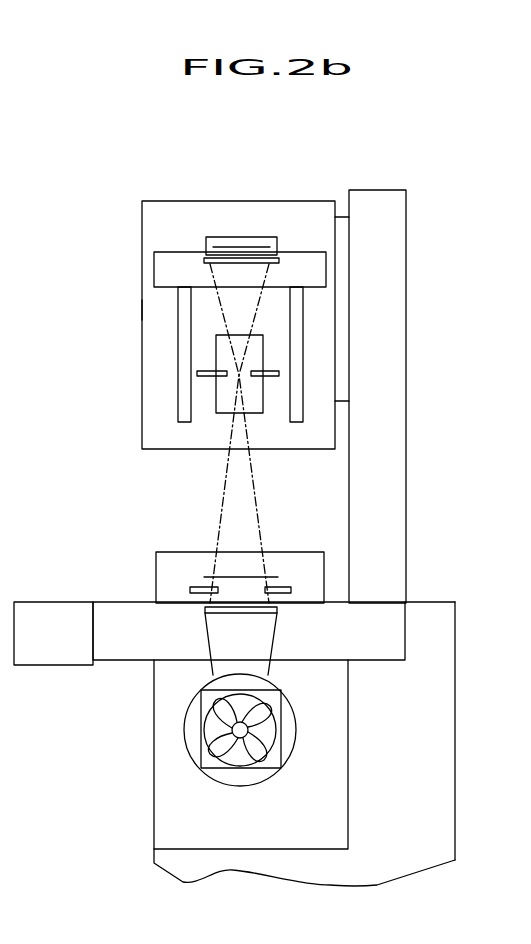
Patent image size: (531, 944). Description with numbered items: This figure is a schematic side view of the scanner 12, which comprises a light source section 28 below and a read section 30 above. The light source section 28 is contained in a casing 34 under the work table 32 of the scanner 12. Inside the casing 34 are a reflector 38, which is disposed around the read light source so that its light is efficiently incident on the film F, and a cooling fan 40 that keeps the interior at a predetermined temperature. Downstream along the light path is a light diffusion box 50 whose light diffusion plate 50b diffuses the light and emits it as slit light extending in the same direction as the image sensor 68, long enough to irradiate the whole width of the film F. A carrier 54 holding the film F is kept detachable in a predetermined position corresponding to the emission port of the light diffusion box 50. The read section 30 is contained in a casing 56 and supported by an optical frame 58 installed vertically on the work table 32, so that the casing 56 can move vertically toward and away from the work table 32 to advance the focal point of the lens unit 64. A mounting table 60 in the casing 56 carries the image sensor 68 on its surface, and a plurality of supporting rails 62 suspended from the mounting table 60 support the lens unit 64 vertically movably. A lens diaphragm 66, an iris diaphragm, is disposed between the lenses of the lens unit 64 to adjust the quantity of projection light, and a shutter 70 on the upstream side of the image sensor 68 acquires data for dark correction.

The scanner 12 is at (445, 176).
The light source section 28 is at (170, 823).
The read section 30 is at (161, 423).
The work table 32 is at (65, 602).
The casing 34 is at (340, 856).
The reflector 38 is at (292, 702).
The cooling fan 40 is at (275, 757).
The light diffusion box 50 is at (253, 638).
The light diffusion plate 50b is at (227, 613).
The carrier 54 is at (157, 552).
The casing 56 is at (142, 308).
The optical frame 58 is at (393, 293).
The mounting table 60 is at (154, 275).
The supporting rails 62 is at (178, 345).
The lens unit 64 is at (257, 413).
The lens diaphragm 66 is at (197, 373).
The image sensor 68 is at (247, 237).
The shutter 70 is at (279, 262).
The film F is at (204, 577).